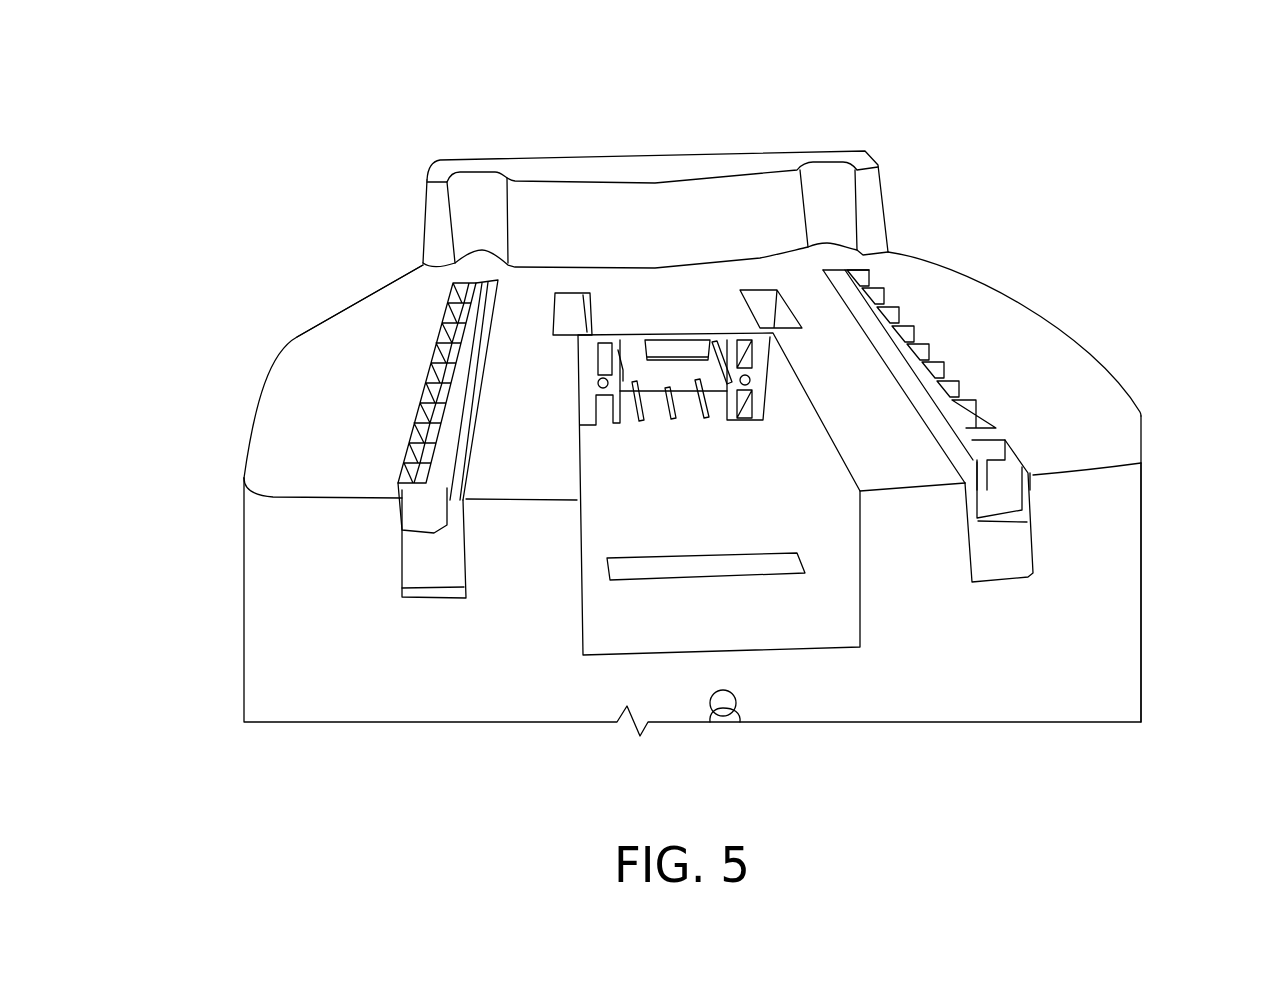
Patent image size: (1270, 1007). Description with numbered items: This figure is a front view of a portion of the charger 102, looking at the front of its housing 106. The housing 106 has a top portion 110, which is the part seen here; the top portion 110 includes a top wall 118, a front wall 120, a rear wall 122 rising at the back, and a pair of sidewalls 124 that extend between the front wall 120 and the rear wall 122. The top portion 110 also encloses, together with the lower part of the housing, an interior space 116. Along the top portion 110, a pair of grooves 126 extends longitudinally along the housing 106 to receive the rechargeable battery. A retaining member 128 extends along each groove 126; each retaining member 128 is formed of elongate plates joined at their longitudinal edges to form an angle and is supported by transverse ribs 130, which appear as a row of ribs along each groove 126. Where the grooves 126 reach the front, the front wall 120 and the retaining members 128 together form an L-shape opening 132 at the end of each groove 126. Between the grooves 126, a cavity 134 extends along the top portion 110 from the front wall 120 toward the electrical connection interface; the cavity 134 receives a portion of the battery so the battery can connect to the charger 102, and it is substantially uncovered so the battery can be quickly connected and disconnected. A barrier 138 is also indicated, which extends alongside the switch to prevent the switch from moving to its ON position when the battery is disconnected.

The charger 102 is at (406, 108).
The housing 106 is at (650, 197).
The top portion 110 is at (970, 258).
The interior space 116 is at (1028, 553).
The top wall 118 is at (343, 338).
The front wall 120 is at (308, 655).
The rear wall 122 is at (546, 158).
The sidewalls 124 is at (244, 575).
The grooves 126 is at (457, 317).
The retaining member 128 is at (425, 532).
The transverse ribs 130 is at (430, 433).
The L-shape opening 132 is at (437, 595).
The cavity 134 is at (679, 517).
The barrier 138 is at (472, 276).